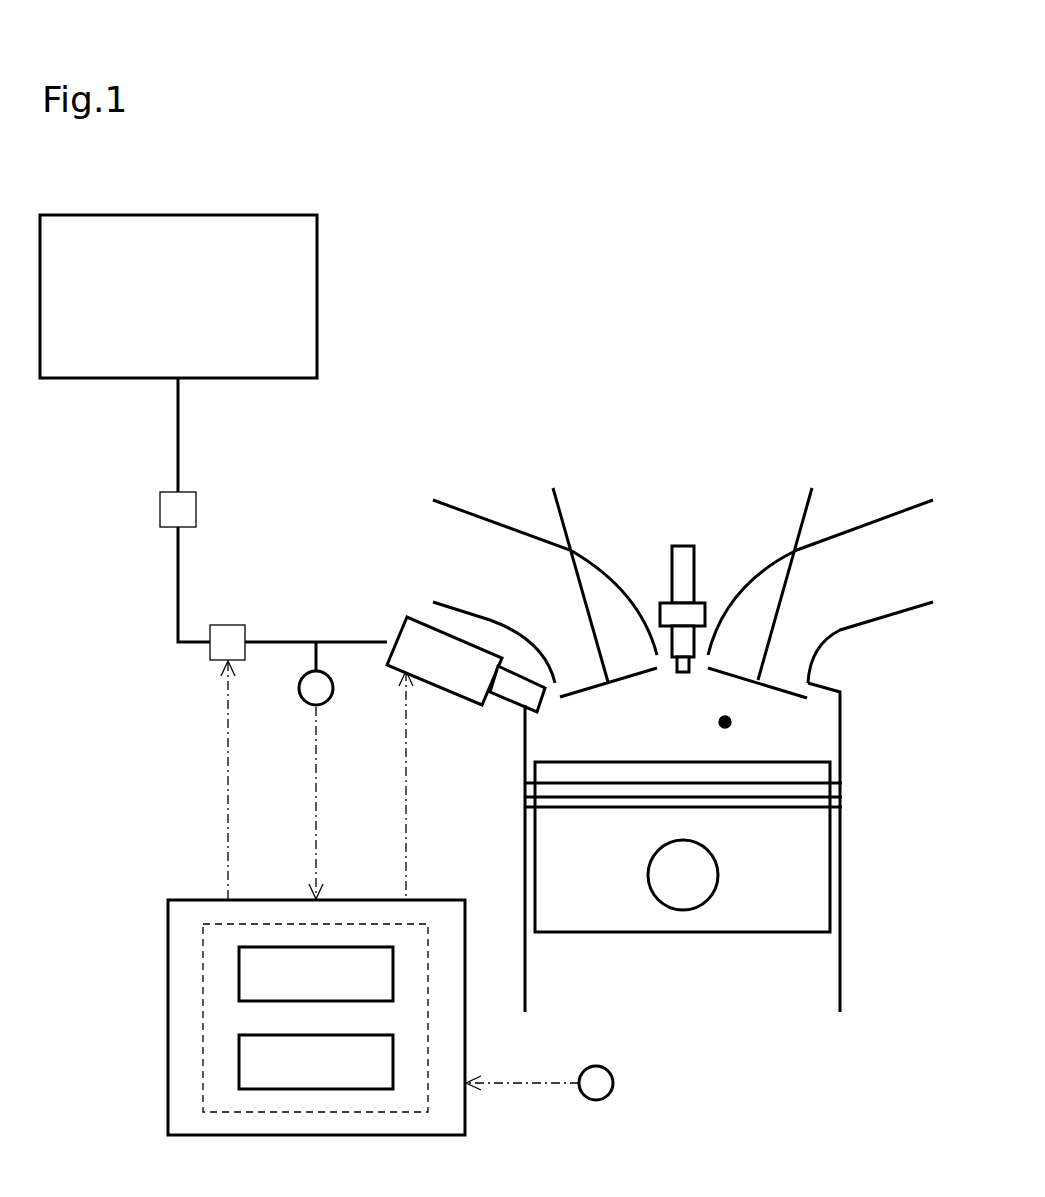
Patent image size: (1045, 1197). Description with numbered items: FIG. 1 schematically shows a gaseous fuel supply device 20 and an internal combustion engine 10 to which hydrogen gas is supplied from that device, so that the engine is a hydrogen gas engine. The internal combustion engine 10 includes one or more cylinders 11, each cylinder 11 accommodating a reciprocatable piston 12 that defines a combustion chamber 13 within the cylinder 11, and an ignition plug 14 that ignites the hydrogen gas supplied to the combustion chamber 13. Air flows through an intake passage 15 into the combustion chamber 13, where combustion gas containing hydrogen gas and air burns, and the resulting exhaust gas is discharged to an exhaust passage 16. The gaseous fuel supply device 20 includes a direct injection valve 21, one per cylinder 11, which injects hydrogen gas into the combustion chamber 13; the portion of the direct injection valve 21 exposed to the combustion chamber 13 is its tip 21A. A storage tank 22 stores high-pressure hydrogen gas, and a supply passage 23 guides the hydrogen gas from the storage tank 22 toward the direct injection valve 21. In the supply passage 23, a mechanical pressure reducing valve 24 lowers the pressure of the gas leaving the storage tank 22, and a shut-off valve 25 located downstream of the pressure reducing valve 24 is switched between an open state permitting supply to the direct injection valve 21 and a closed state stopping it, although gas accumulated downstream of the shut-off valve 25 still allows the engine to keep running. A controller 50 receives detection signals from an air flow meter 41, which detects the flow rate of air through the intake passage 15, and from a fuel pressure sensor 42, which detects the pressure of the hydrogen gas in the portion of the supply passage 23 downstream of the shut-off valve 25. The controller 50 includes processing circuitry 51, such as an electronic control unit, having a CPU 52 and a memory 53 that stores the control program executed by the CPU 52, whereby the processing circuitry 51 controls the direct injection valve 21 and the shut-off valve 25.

The internal combustion engine 10 is at (855, 410).
The cylinder 11 is at (838, 958).
The piston 12 is at (820, 862).
The combustion chamber 13 is at (725, 722).
The ignition plug 14 is at (687, 643).
The intake passage 15 is at (507, 528).
The exhaust passage 16 is at (883, 615).
The gaseous fuel supply device 20 is at (113, 813).
The direct injection valve 21 is at (413, 637).
The tip 21A is at (535, 697).
The storage tank 22 is at (308, 295).
The supply passage 23 is at (180, 430).
The pressure reducing valve 24 is at (188, 487).
The shut-off valve 25 is at (237, 620).
The air flow meter 41 is at (615, 1083).
The fuel pressure sensor 42 is at (308, 688).
The controller 50 is at (168, 932).
The processing circuitry 51 is at (203, 1018).
The CPU 52 is at (239, 975).
The memory 53 is at (239, 1063).